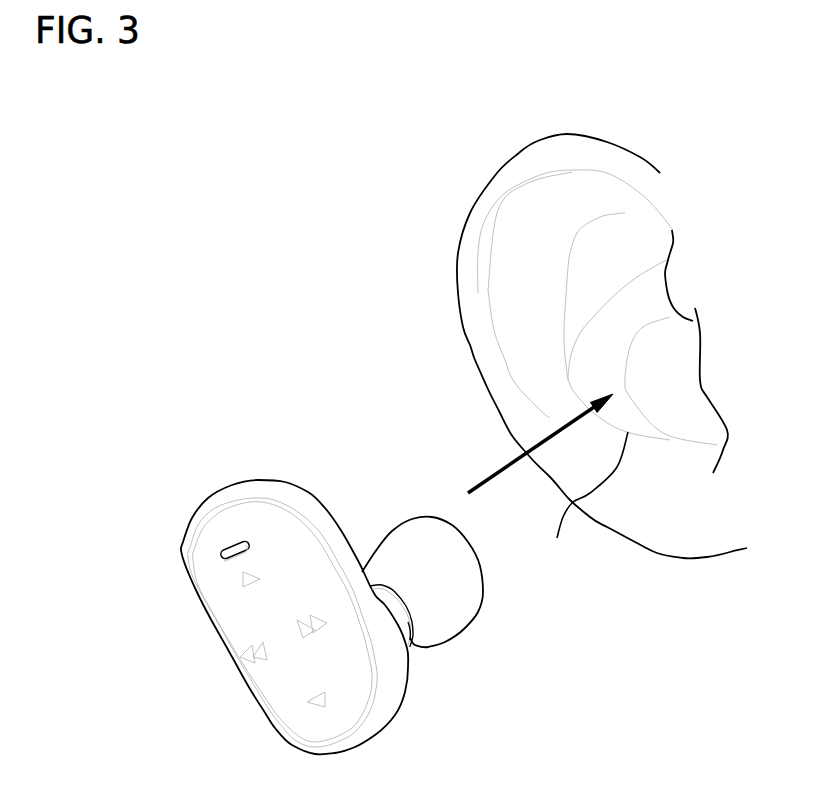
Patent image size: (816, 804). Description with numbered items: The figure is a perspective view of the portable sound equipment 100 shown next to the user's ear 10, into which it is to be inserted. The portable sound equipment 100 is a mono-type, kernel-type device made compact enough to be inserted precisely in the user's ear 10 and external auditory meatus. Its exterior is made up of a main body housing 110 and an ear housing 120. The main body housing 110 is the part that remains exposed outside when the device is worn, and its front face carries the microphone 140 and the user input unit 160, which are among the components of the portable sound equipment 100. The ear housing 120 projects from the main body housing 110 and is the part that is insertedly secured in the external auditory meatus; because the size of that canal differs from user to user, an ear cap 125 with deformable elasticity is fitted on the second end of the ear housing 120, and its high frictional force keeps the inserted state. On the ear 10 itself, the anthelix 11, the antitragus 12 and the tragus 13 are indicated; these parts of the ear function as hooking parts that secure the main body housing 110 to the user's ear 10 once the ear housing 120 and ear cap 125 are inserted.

The ear 10 is at (605, 380).
The anthelix 11 is at (530, 220).
The antitragus 12 is at (588, 501).
The tragus 13 is at (725, 378).
The portable sound equipment 100 is at (320, 549).
The main body housing 110 is at (397, 695).
The ear housing 120 is at (405, 615).
The ear cap 125 is at (467, 560).
The microphone 140 is at (232, 550).
The user input unit 160 is at (242, 581).